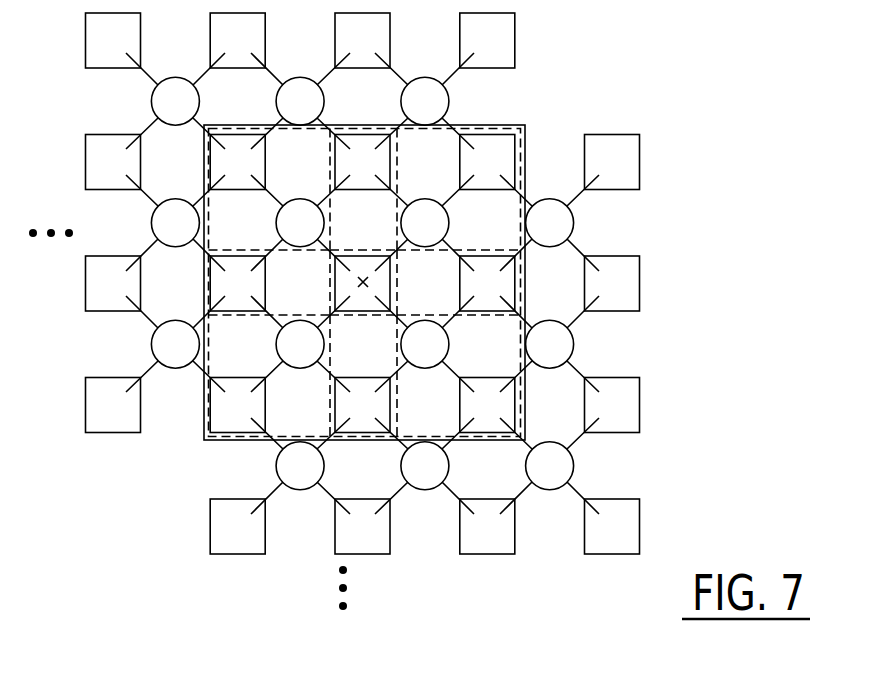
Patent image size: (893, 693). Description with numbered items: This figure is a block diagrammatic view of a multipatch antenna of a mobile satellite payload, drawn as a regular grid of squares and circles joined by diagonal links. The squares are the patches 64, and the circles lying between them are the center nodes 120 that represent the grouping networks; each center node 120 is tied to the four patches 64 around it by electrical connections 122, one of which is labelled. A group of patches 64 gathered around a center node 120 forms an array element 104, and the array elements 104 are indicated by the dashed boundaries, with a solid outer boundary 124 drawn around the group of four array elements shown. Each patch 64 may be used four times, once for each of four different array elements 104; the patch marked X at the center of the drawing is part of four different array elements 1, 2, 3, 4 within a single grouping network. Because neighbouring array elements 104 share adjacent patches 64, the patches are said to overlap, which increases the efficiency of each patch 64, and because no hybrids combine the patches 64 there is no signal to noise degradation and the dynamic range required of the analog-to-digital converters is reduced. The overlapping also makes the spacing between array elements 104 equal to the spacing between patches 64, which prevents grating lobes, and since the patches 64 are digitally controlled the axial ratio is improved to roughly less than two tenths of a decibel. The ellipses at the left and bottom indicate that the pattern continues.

The patch 64 is at (515, 33).
The center node 120 is at (577, 222).
The electrical connection 122 is at (585, 313).
The outer sub-array boundary 124 is at (528, 128).
The array element 104 is at (357, 127).
The array element 1 is at (236, 92).
The array element 2 is at (493, 128).
The array element 3 is at (215, 442).
The array element 4 is at (512, 443).